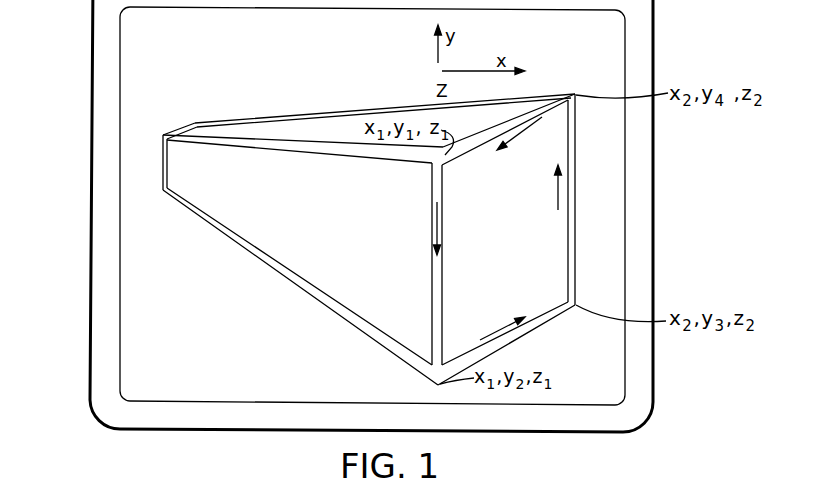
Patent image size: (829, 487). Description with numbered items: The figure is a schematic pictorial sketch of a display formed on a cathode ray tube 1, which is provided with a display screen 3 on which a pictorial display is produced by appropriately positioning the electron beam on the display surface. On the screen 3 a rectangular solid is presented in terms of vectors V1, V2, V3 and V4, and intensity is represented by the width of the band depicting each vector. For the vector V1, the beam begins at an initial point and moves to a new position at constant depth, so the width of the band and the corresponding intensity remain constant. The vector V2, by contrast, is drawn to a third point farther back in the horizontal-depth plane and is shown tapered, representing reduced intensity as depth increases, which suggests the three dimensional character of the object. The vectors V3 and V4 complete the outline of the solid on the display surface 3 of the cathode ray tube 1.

The cathode ray tube 1 is at (84, 250).
The display screen 3 is at (218, 353).
The vector V1 is at (448, 258).
The vector V2 is at (551, 305).
The vector V3 is at (580, 192).
The vector V4 is at (547, 103).